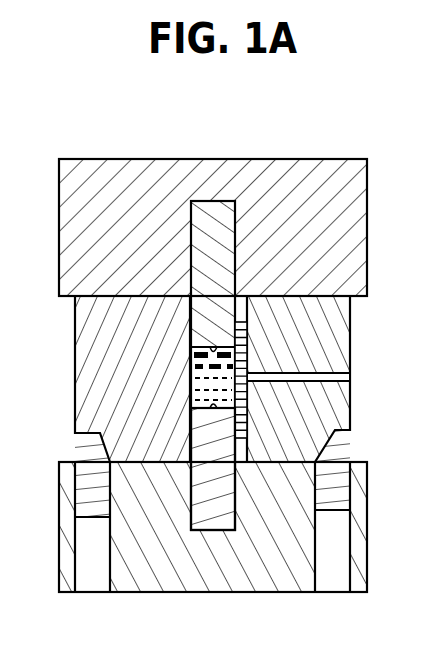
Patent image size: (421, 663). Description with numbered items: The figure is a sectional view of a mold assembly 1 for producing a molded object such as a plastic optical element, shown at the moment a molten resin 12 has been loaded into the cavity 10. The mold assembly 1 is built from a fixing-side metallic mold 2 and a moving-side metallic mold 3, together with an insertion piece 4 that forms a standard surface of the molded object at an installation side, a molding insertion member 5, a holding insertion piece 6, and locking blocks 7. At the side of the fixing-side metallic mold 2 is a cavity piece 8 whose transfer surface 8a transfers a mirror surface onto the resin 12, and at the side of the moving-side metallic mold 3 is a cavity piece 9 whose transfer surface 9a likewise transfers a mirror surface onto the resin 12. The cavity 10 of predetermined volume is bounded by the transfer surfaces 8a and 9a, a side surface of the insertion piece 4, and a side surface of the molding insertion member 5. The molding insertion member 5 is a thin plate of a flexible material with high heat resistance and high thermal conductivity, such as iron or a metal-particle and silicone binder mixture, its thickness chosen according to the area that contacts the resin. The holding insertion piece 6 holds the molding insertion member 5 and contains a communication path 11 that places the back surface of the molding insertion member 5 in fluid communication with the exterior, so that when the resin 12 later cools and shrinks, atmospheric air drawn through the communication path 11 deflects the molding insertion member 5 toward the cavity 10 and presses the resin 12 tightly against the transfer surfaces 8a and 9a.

The mold assembly 1 is at (103, 132).
The fixing-side metallic mold 2 is at (71, 158).
The moving-side metallic mold 3 is at (150, 592).
The insertion piece 4 is at (88, 350).
The molding insertion member 5 is at (248, 440).
The holding insertion piece 6 is at (342, 397).
The locking blocks 7 is at (87, 446).
The cavity piece 8 is at (208, 200).
The transfer surface 8a is at (213, 345).
The cavity piece 9 is at (228, 508).
The transfer surface 9a is at (210, 410).
The cavity 10 is at (192, 392).
The communication path 11 is at (325, 372).
The resin 12 is at (193, 376).